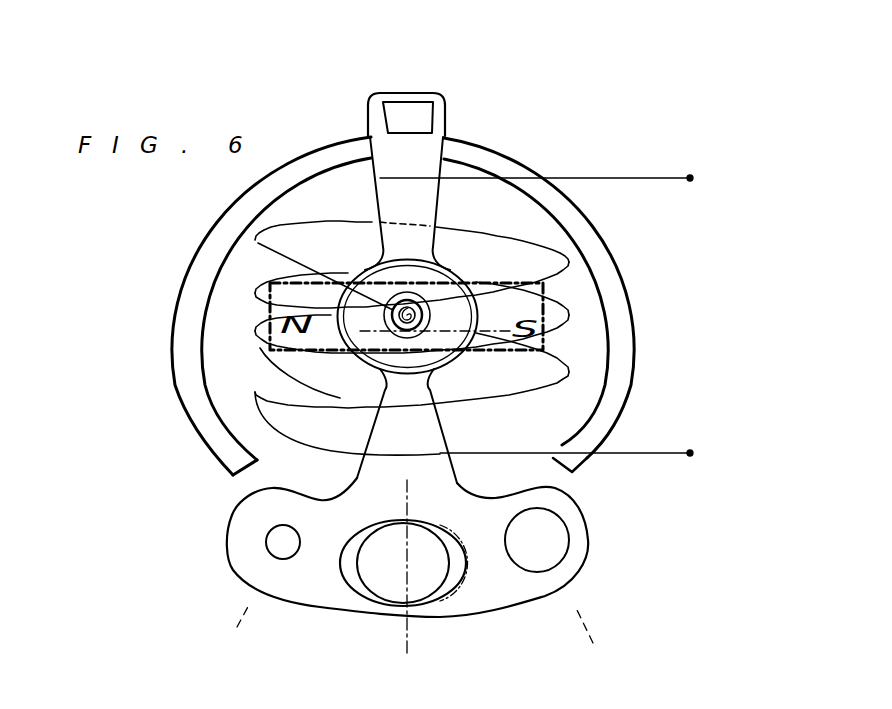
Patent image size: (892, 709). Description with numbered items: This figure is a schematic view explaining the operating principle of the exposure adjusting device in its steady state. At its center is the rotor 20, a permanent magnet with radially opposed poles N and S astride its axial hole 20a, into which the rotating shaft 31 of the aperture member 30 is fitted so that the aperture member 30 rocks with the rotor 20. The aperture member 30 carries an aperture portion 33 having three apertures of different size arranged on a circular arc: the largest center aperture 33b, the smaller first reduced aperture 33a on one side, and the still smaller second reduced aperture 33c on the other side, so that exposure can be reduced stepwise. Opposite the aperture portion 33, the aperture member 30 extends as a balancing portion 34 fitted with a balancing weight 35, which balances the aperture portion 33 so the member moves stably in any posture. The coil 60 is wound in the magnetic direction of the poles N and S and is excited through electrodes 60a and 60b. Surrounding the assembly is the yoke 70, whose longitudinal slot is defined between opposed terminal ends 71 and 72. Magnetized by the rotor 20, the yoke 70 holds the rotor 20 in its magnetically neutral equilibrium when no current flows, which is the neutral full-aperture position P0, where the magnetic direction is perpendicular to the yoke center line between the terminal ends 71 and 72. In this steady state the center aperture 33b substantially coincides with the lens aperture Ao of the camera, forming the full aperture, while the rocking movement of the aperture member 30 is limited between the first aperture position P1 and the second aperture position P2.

The rotor 20 is at (495, 226).
The axial hole 20a is at (275, 216).
The rotating shaft 31 is at (236, 276).
The aperture member 30 is at (232, 513).
The aperture portion 33 is at (577, 557).
The first reduced aperture 33a is at (550, 562).
The center aperture 33b is at (452, 562).
The second reduced aperture 33c is at (285, 556).
The balancing portion 34 is at (443, 113).
The balancing weight 35 is at (388, 115).
The coil 60 is at (545, 293).
The electrode 60a is at (690, 178).
The electrode 60b is at (690, 453).
The yoke 70 is at (480, 157).
The terminal end 71 is at (237, 467).
The terminal end 72 is at (555, 460).
The neutral position P0 is at (407, 586).
The first aperture position P1 is at (231, 632).
The second aperture position P2 is at (600, 637).
The lens aperture Ao is at (365, 578).